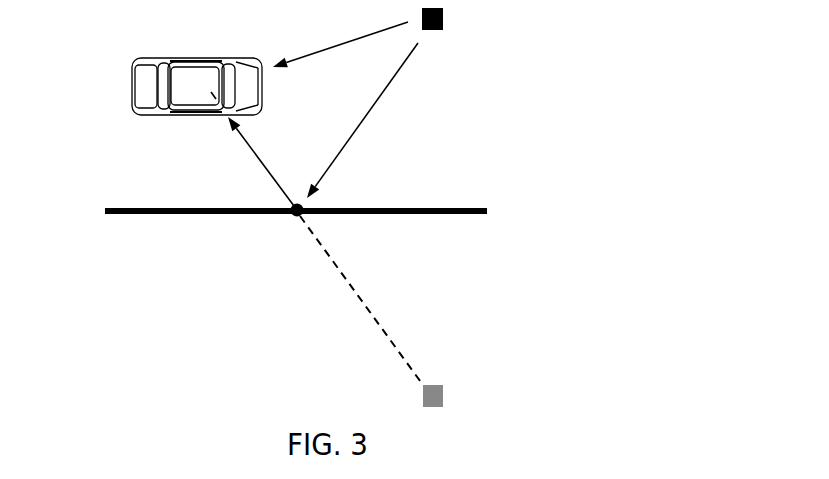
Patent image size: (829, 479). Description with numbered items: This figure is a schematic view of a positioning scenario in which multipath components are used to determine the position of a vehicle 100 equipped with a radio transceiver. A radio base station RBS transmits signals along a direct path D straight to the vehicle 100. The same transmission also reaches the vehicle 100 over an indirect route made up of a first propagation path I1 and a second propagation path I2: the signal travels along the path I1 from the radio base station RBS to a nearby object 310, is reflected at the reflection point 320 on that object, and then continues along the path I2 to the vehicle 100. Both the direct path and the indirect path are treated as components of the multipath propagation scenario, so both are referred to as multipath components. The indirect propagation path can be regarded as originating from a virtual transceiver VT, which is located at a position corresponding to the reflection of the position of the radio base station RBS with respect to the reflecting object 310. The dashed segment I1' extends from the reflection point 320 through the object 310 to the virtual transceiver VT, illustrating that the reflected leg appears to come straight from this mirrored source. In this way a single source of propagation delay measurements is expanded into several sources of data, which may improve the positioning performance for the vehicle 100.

The vehicle 100 is at (172, 77).
The nearby object 310 is at (137, 210).
The reflection 320 is at (295, 217).
The radio base station RBS is at (462, 17).
The virtual transceiver VT is at (453, 403).
The direct path D is at (340, 42).
The indirect propagation path I1 is at (362, 120).
The indirect propagation path I2 is at (262, 163).
The virtual path segment I1' is at (361, 300).